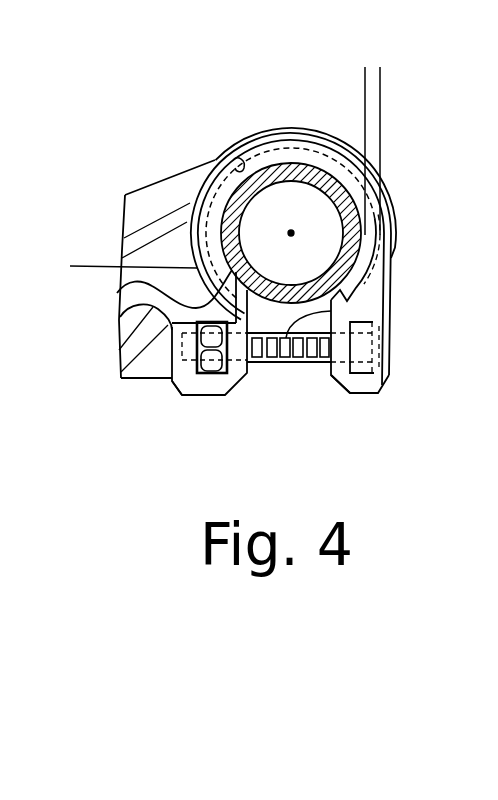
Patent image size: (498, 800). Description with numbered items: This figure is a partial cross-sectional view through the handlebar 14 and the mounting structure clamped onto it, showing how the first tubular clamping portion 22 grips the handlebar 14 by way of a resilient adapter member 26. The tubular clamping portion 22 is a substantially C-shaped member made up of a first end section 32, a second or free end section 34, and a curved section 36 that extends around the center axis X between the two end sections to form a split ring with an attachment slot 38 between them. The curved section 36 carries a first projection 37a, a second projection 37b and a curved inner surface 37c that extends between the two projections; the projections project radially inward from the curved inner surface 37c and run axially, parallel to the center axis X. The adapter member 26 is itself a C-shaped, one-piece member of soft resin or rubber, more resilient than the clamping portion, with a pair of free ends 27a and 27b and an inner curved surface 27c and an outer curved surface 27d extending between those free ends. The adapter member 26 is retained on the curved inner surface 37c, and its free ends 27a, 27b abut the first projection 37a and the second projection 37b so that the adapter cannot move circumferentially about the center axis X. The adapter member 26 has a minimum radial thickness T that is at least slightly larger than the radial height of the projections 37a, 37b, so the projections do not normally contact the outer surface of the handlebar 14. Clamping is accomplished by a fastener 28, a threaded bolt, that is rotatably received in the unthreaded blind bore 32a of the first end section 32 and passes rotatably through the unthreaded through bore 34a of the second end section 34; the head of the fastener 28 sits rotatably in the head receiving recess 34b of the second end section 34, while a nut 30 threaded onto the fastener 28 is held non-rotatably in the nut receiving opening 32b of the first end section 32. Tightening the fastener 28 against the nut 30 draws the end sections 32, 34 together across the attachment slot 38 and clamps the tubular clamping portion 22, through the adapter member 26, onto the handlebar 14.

The handlebar 14 is at (272, 207).
The first tubular clamping portion 22 is at (192, 150).
The adapter member 26 is at (182, 192).
The free end 27a is at (138, 289).
The free end 27b is at (356, 296).
The inner curved surface 27c is at (212, 240).
The outer curved surface 27d is at (318, 128).
The fastener 28 is at (295, 364).
The nut 30 is at (210, 374).
The first end section 32 is at (173, 403).
The blind bore 32a is at (168, 370).
The nut receiving opening 32b is at (124, 349).
The second end section 34 is at (374, 403).
The through bore 34a is at (337, 381).
The head receiving recess 34b is at (383, 337).
The curved section 36 is at (290, 128).
The first projection 37a is at (108, 262).
The second projection 37b is at (285, 337).
The curved inner surface 37c is at (240, 143).
The attachment slot 38 is at (312, 375).
The minimum radial thickness T is at (422, 72).
The center axis X is at (291, 233).